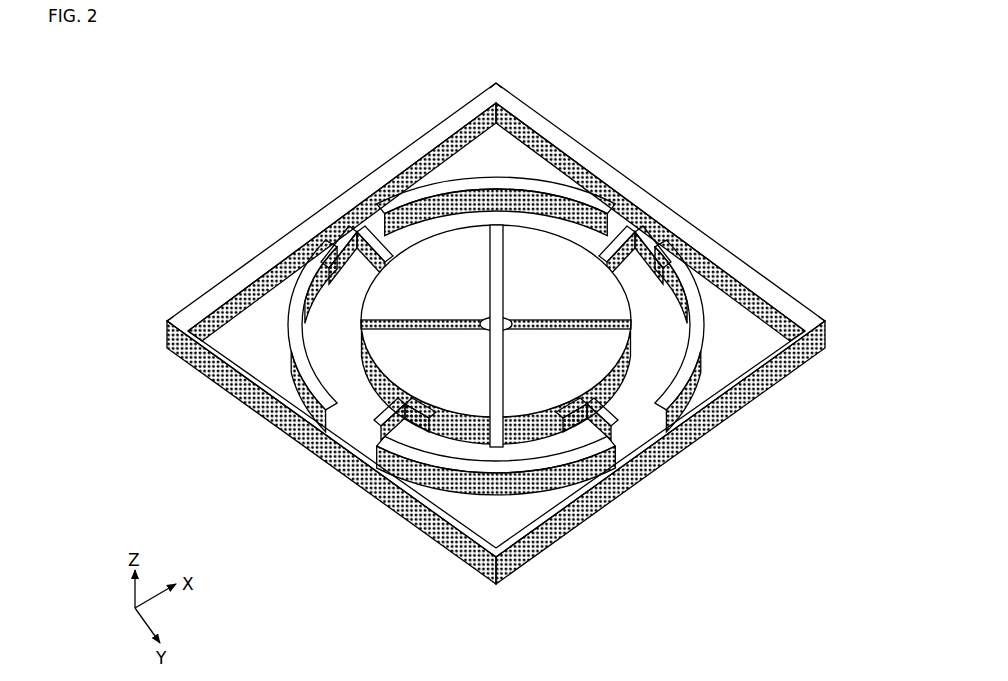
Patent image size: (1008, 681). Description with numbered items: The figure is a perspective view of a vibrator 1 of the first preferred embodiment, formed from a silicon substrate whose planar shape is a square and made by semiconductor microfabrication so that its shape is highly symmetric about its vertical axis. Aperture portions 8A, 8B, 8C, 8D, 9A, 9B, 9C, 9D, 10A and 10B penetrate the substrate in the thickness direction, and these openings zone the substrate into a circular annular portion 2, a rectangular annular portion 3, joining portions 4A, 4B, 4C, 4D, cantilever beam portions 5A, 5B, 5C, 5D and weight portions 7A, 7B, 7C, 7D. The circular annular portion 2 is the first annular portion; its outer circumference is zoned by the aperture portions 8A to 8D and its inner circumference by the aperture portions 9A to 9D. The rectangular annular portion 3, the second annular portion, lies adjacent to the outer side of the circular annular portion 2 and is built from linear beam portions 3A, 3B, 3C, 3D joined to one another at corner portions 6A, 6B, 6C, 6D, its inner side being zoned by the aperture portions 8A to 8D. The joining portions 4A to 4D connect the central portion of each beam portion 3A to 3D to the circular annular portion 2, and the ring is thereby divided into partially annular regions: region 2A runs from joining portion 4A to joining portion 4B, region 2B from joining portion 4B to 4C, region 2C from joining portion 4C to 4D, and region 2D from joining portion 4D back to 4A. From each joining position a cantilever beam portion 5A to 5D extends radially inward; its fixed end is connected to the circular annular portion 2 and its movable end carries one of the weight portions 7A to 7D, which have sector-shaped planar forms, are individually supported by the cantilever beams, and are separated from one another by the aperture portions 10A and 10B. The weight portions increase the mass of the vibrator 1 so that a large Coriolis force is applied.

The vibrator 1 is at (696, 93).
The circular annular portion 2 is at (520, 176).
The partially annular region 2A is at (682, 256).
The partially annular region 2B is at (430, 458).
The partially annular region 2C is at (322, 410).
The partially annular region 2D is at (432, 133).
The rectangular annular portion 3 is at (584, 151).
The beam portion 3A is at (690, 228).
The beam portion 3B is at (624, 483).
The beam portion 3C is at (358, 465).
The beam portion 3D is at (356, 184).
The joining portion 4A is at (633, 218).
The joining portion 4B is at (628, 454).
The joining portion 4C is at (406, 432).
The joining portion 4D is at (347, 214).
The cantilever beam portion 5A is at (645, 233).
The cantilever beam portion 5B is at (640, 441).
The cantilever beam portion 5C is at (362, 432).
The cantilever beam portion 5D is at (345, 222).
The corner portion 6A is at (826, 322).
The corner portion 6B is at (500, 556).
The corner portion 6C is at (165, 322).
The corner portion 6D is at (497, 84).
The weight portion 7A is at (600, 212).
The weight portion 7B is at (560, 430).
The weight portion 7C is at (300, 386).
The weight portion 7D is at (448, 190).
The aperture portion 8A is at (742, 326).
The aperture portion 8B is at (544, 497).
The aperture portion 8C is at (243, 342).
The aperture portion 8D is at (473, 139).
The aperture portion 9A is at (667, 337).
The aperture portion 9B is at (518, 457).
The aperture portion 9C is at (338, 307).
The aperture portion 9D is at (482, 214).
The aperture portion 10A is at (412, 322).
The aperture portion 10B is at (493, 412).